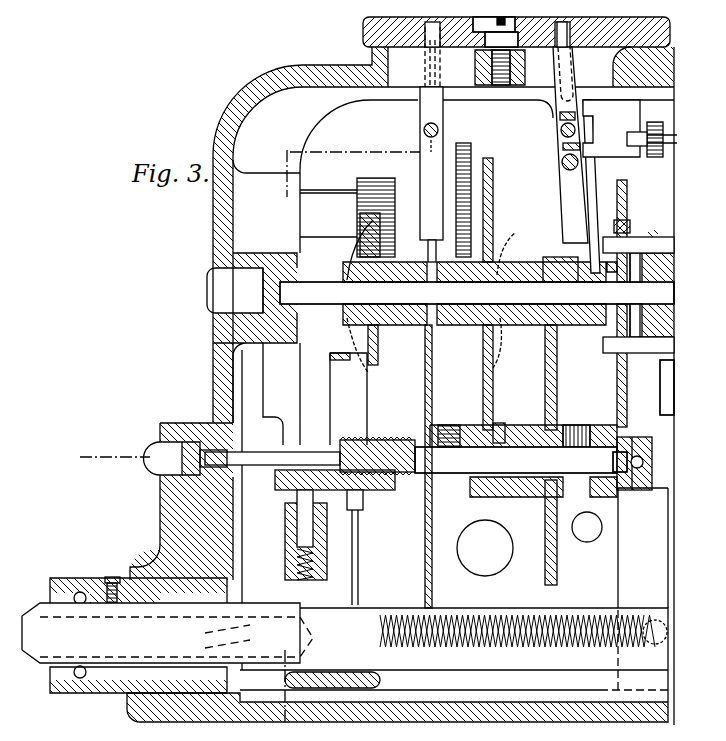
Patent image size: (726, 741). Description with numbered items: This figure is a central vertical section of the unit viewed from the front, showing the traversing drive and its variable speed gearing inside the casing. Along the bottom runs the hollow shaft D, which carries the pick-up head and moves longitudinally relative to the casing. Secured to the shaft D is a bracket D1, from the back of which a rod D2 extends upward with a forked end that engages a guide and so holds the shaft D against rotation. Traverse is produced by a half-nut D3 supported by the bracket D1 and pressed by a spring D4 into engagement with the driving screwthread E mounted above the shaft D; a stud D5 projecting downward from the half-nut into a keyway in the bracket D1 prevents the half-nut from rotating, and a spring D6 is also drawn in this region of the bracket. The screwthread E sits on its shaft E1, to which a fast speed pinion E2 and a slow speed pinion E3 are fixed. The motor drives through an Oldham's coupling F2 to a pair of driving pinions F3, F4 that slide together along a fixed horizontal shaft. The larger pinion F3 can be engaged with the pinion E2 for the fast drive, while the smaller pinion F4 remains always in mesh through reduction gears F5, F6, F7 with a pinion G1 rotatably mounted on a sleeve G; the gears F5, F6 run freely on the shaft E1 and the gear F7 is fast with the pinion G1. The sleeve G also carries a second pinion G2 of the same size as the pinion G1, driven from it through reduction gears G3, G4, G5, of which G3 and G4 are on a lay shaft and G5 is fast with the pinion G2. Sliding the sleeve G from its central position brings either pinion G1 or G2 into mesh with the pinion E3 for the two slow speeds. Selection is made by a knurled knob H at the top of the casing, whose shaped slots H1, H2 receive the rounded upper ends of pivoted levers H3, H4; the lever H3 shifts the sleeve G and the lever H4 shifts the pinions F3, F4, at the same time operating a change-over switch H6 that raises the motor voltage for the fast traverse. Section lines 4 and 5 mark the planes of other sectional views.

The section line 4- 4 is at (95, 457).
The section line 5- 5 is at (283, 690).
The hollow shaft D is at (45, 643).
The bracket D1 is at (353, 683).
The rod D2 is at (345, 375).
The half-nut D3 is at (378, 488).
The spring D4 is at (295, 548).
The stud D5 is at (360, 543).
The spring D6 is at (453, 617).
The driving screwthread E is at (382, 445).
The shaft of the screwthread E1 is at (287, 452).
The pinion E2 is at (605, 497).
The pinion E3 is at (426, 425).
The Oldham's coupling F2 is at (660, 237).
The driving pinion F3 is at (617, 388).
The driving pinion F4 is at (560, 258).
The reduction gear F5 is at (546, 362).
The reduction gear F6 is at (500, 423).
The reduction gear F7 is at (495, 165).
The sleeve G is at (508, 262).
The pinion G1 is at (462, 330).
The second pinion G2 is at (410, 330).
The reduction gear G3 is at (466, 147).
The reduction gear G4 is at (372, 183).
The reduction gear G5 is at (370, 222).
The knurled knob H is at (619, 47).
The shaped slot H1 is at (440, 35).
The shaped slot H2 is at (556, 50).
The pivoted lever H3 is at (437, 112).
The pivoted lever H4 is at (570, 84).
The change-over switch H6 is at (657, 145).